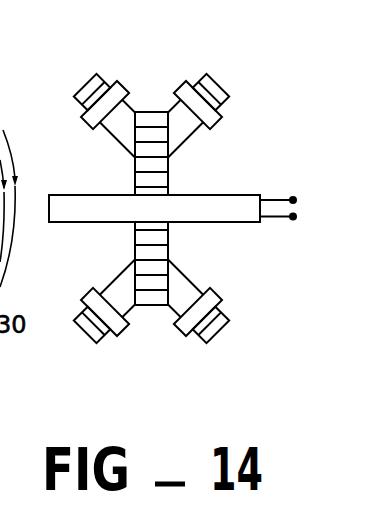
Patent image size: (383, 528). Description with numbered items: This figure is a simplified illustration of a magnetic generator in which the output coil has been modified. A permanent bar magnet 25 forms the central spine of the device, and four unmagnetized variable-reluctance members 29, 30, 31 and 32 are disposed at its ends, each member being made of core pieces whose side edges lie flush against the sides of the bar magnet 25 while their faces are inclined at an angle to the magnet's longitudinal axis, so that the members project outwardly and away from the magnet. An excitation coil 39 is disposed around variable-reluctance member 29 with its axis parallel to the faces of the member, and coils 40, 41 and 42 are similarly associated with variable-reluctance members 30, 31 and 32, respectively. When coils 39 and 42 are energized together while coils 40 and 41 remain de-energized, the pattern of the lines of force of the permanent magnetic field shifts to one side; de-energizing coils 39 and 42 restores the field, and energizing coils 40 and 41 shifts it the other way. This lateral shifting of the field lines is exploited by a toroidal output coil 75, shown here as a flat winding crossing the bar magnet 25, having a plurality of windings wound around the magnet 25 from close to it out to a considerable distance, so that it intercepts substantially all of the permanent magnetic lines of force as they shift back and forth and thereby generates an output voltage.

The bar magnet 25 is at (172, 172).
The toroidal output coil 75 is at (90, 202).
The variable-reluctance member 29 is at (82, 325).
The variable-reluctance member 30 is at (225, 323).
The variable-reluctance member 31 is at (207, 73).
The variable-reluctance member 32 is at (100, 75).
The coil 39 is at (92, 293).
The coil 40 is at (212, 291).
The coil 41 is at (219, 123).
The coil 42 is at (86, 125).